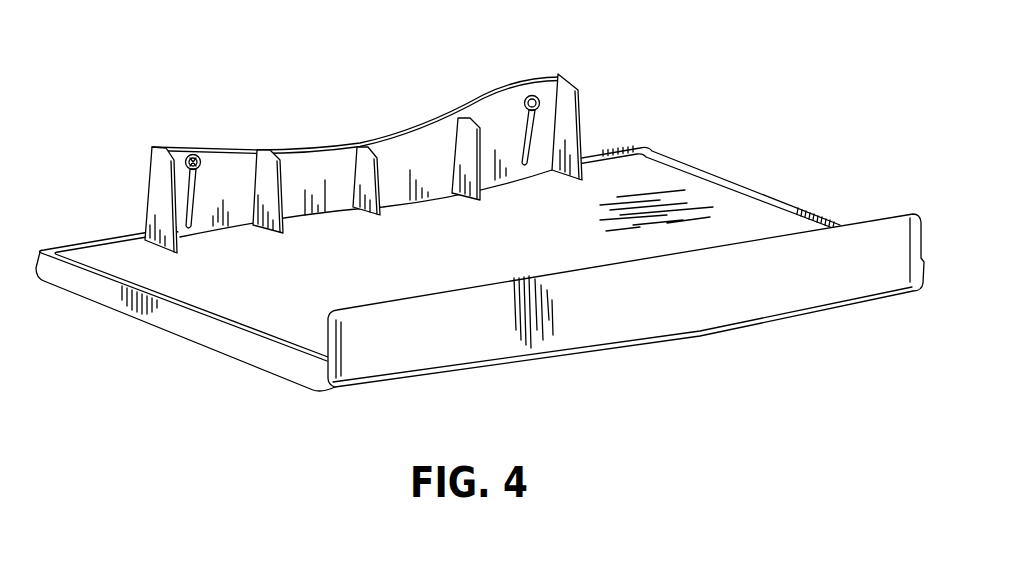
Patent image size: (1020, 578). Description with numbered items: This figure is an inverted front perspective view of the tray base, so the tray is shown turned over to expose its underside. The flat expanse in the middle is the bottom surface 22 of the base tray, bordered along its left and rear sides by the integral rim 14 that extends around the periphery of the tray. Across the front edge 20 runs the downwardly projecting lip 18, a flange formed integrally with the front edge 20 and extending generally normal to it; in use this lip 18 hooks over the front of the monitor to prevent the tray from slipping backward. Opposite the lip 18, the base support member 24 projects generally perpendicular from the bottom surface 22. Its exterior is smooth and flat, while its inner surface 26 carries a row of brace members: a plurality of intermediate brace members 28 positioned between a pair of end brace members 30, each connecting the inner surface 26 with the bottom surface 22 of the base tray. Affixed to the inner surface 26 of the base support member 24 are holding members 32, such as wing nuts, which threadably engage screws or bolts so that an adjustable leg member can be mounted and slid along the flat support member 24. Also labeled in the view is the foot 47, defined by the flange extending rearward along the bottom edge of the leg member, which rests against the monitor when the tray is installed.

The rim 14 is at (193, 330).
The lip 18 is at (662, 311).
The front edge 20 is at (598, 348).
The bottom surface 22 is at (378, 278).
The base support member 24 is at (361, 127).
The inner surface 26 is at (313, 177).
The intermediate brace members 28 is at (258, 176).
The end brace members 30 is at (152, 196).
The holding members 32 is at (197, 153).
The foot 47 is at (157, 140).